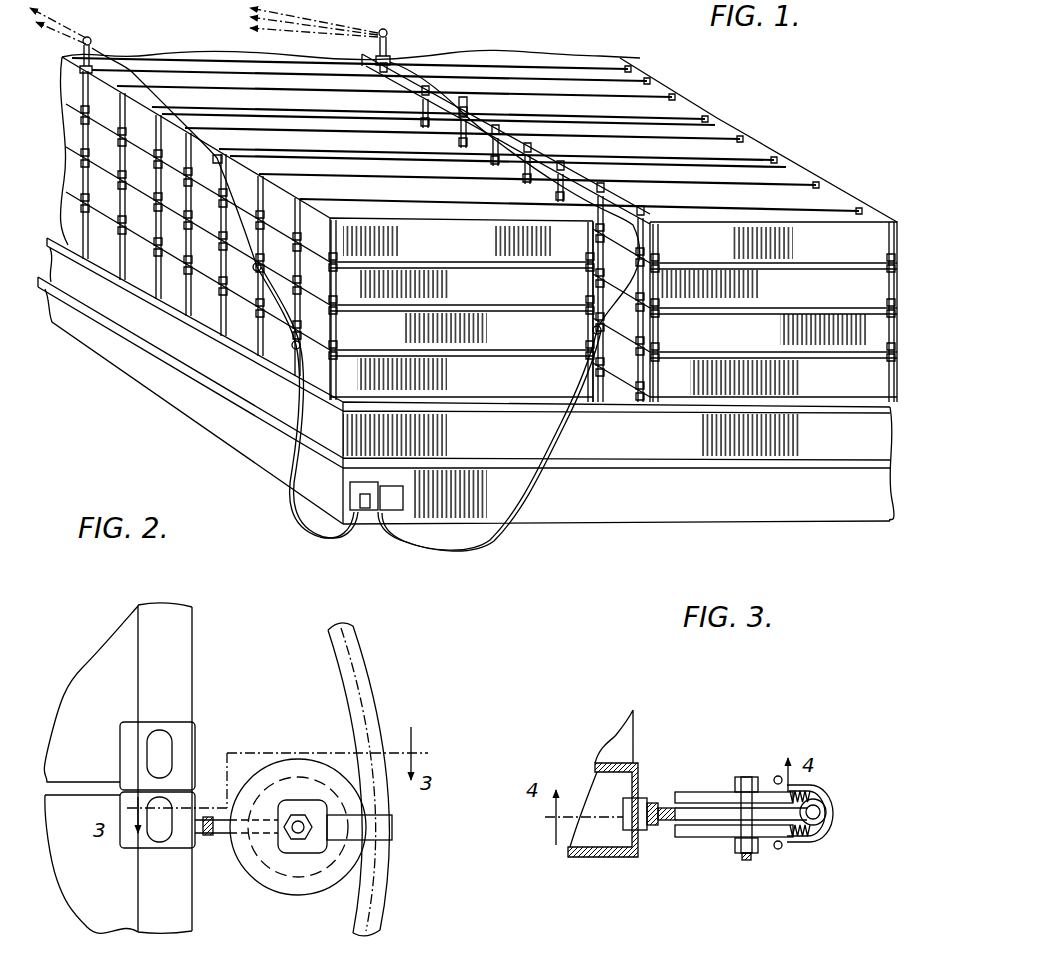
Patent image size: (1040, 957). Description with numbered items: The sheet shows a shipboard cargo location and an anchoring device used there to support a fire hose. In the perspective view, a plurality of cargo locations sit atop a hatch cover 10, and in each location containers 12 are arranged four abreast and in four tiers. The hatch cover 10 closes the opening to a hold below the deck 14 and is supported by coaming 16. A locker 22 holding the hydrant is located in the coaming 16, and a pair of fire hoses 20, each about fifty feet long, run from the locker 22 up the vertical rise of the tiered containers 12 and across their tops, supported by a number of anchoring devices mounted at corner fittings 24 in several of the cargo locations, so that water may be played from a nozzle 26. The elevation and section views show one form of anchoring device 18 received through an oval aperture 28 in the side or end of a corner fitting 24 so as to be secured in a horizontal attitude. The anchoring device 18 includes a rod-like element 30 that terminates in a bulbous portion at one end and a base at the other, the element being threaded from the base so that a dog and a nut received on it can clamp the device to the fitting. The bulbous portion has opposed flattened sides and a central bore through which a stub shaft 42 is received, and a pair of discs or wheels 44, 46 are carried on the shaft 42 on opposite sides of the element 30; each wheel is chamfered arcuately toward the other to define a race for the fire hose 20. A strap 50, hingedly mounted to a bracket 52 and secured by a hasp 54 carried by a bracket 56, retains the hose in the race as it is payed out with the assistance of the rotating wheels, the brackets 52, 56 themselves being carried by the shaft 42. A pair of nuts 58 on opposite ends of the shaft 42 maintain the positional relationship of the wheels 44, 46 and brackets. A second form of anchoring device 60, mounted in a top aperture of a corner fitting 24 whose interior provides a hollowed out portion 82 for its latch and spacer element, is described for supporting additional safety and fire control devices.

In FIG. 1, the hatch cover 10 is at (195, 348).
In FIG. 1, the containers 12 is at (708, 103).
In FIG. 2, the containers 12 is at (175, 682).
In FIG. 3, the containers 12 is at (623, 743).
In FIG. 1, the deck 14 is at (177, 446).
In FIG. 1, the coaming 16 is at (615, 505).
In FIG. 1, the anchoring device 18 is at (303, 338).
In FIG. 2, the anchoring device 18 is at (293, 846).
In FIG. 3, the anchoring device 18 is at (751, 808).
In FIG. 1, the fire hose 20 is at (284, 500).
In FIG. 2, the fire hose 20 is at (367, 708).
In FIG. 3, the fire hose 20 is at (832, 835).
In FIG. 1, the locker 22 is at (375, 520).
In FIG. 2, the corner fitting 24 is at (185, 752).
In FIG. 3, the corner fitting 24 is at (578, 853).
In FIG. 1, the nozzle 26 is at (85, 36).
In FIG. 2, the aperture 28 is at (147, 747).
In FIG. 2, the element 30 is at (225, 834).
In FIG. 3, the element 30 is at (663, 806).
In FIG. 3, the stub shaft 42 is at (747, 858).
In FIG. 3, the disc or wheel 44 is at (700, 790).
In FIG. 3, the disc or wheel 46 is at (806, 826).
In FIG. 3, the strap 50 is at (832, 797).
In FIG. 3, the bracket 52 is at (763, 783).
In FIG. 3, the hasp 54 is at (778, 850).
In FIG. 3, the bracket 56 is at (735, 837).
In FIG. 3, the nuts 58 is at (745, 776).
In FIG. 1, the anchoring device 60 is at (100, 57).
In FIG. 3, the hollowed out portion 82 is at (600, 783).